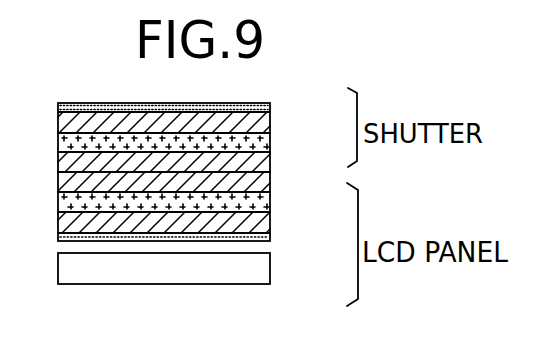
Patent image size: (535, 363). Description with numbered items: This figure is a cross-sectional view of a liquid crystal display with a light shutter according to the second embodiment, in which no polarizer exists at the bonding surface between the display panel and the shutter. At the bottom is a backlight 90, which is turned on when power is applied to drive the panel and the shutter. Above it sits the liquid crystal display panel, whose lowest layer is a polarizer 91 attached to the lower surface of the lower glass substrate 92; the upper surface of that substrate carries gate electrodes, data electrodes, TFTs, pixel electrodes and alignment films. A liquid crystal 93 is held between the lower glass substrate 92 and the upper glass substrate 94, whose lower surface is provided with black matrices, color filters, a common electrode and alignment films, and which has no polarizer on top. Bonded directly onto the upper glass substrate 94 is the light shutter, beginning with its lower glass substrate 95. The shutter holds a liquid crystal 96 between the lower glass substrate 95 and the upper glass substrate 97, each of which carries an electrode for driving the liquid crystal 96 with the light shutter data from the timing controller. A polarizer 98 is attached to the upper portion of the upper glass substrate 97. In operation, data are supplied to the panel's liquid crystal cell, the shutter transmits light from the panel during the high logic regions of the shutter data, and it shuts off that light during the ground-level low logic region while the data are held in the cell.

The backlight 90 is at (267, 265).
The polarizer 91 is at (270, 238).
The lower glass substrate 92 is at (270, 220).
The liquid crystal 93 is at (270, 200).
The upper glass substrate 94 is at (270, 178).
The lower glass substrate 95 is at (270, 164).
The liquid crystal 96 is at (270, 144).
The upper glass substrate 97 is at (270, 123).
The polarizer 98 is at (270, 107).